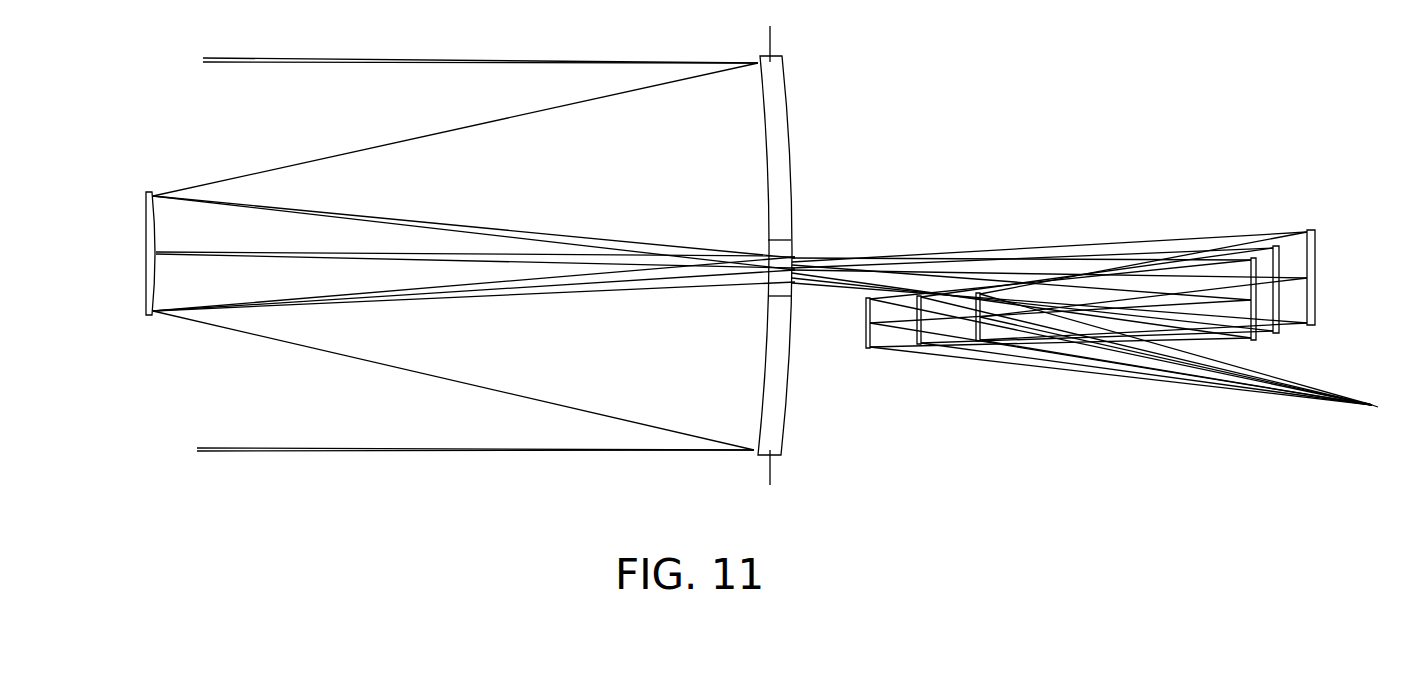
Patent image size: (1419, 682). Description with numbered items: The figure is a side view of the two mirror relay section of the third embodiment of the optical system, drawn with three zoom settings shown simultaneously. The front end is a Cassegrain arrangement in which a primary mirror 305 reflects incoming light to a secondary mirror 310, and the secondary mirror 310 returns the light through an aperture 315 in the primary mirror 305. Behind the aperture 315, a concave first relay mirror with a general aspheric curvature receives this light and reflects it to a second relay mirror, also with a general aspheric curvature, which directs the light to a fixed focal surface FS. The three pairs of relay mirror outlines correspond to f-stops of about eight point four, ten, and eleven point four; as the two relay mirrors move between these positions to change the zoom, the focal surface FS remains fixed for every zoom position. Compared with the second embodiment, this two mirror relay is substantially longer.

The primary mirror 305 is at (790, 118).
The secondary mirror 310 is at (145, 306).
The aperture 315 is at (790, 244).
The focal surface FS is at (1372, 405).